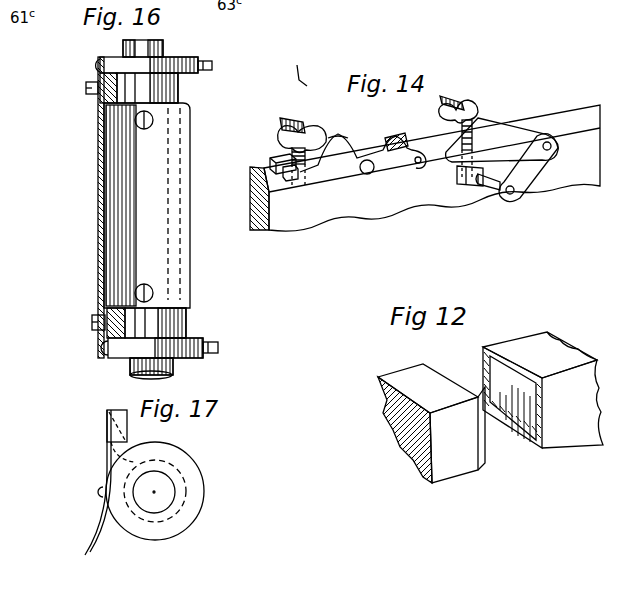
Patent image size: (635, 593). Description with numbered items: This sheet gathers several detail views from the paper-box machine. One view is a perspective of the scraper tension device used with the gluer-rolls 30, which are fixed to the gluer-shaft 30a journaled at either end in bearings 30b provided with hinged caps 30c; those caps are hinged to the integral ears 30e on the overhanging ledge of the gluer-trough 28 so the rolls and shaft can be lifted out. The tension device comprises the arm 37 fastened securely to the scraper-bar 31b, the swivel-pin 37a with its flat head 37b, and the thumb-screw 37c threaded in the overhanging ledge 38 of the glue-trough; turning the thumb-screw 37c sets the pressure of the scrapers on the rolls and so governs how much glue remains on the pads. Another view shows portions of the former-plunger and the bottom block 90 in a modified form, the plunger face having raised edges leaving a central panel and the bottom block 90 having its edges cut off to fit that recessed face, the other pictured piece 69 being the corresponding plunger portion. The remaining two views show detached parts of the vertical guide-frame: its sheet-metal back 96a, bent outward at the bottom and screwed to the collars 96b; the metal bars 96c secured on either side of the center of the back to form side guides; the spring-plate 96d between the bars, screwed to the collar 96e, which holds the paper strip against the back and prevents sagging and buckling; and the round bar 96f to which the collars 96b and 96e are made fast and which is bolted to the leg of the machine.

In FIG. 14, the gluer-trough 28 is at (343, 212).
In FIG. 14, the overhanging ledge 38 is at (277, 197).
In FIG. 14, the gluer-rolls 30 is at (418, 165).
In FIG. 14, the gluer-shaft 30a is at (300, 122).
In FIG. 14, the bearings 30b is at (280, 139).
In FIG. 14, the hinged caps 30c is at (335, 146).
In FIG. 14, the integral ears 30e is at (406, 138).
In FIG. 14, the scraper-bar 31b is at (452, 98).
In FIG. 14, the arm 37 is at (530, 168).
In FIG. 14, the swivel-pin 37a is at (494, 192).
In FIG. 14, the flat head 37b is at (460, 186).
In FIG. 14, the thumb-screw 37c is at (482, 120).
In FIG. 12, the frame block 69 is at (580, 431).
In FIG. 12, the bottom block 90 is at (456, 469).
In FIG. 16, the sheet-metal back 96a is at (100, 273).
In FIG. 17, the sheet-metal back 96a is at (97, 541).
In FIG. 16, the collars 96b is at (183, 58).
In FIG. 17, the collars 96b is at (190, 519).
In FIG. 16, the metal bars 96c is at (102, 96).
In FIG. 17, the metal bars 96c is at (122, 426).
In FIG. 16, the spring-plate 96d is at (107, 175).
In FIG. 17, the spring-plate 96d is at (176, 461).
In FIG. 16, the collar 96e is at (175, 92).
In FIG. 17, the collar 96e is at (178, 488).
In FIG. 16, the round bar 96f is at (175, 366).
In FIG. 17, the round bar 96f is at (160, 497).